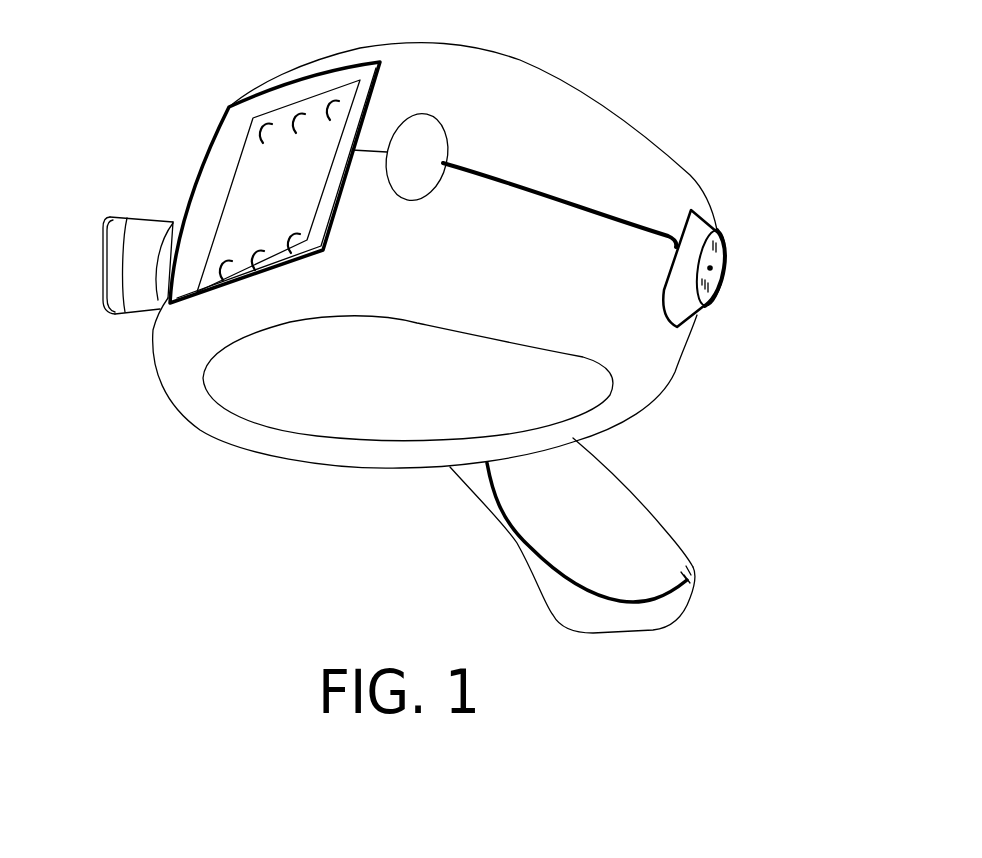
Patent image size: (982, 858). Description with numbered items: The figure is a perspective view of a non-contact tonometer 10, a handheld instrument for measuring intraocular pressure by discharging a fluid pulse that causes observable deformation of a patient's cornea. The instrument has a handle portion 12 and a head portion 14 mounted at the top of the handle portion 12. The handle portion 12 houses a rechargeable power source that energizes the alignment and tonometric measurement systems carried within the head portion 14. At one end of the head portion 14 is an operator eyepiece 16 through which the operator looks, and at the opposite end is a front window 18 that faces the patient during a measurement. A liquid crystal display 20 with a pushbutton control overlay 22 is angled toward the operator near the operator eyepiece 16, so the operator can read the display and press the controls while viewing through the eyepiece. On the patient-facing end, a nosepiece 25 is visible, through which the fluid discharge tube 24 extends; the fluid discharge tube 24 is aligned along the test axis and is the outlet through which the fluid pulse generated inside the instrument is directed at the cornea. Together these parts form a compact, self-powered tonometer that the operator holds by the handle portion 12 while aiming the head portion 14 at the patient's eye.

The non-contact tonometer 10 is at (699, 81).
The handle portion 12 is at (527, 550).
The head portion 14 is at (343, 450).
The operator eyepiece 16 is at (148, 227).
The front window 18 is at (717, 252).
The liquid crystal display 20 is at (286, 200).
The pushbutton control overlay 22 is at (263, 141).
The fluid discharge tube 24 is at (714, 270).
The nosepiece 25 is at (702, 230).